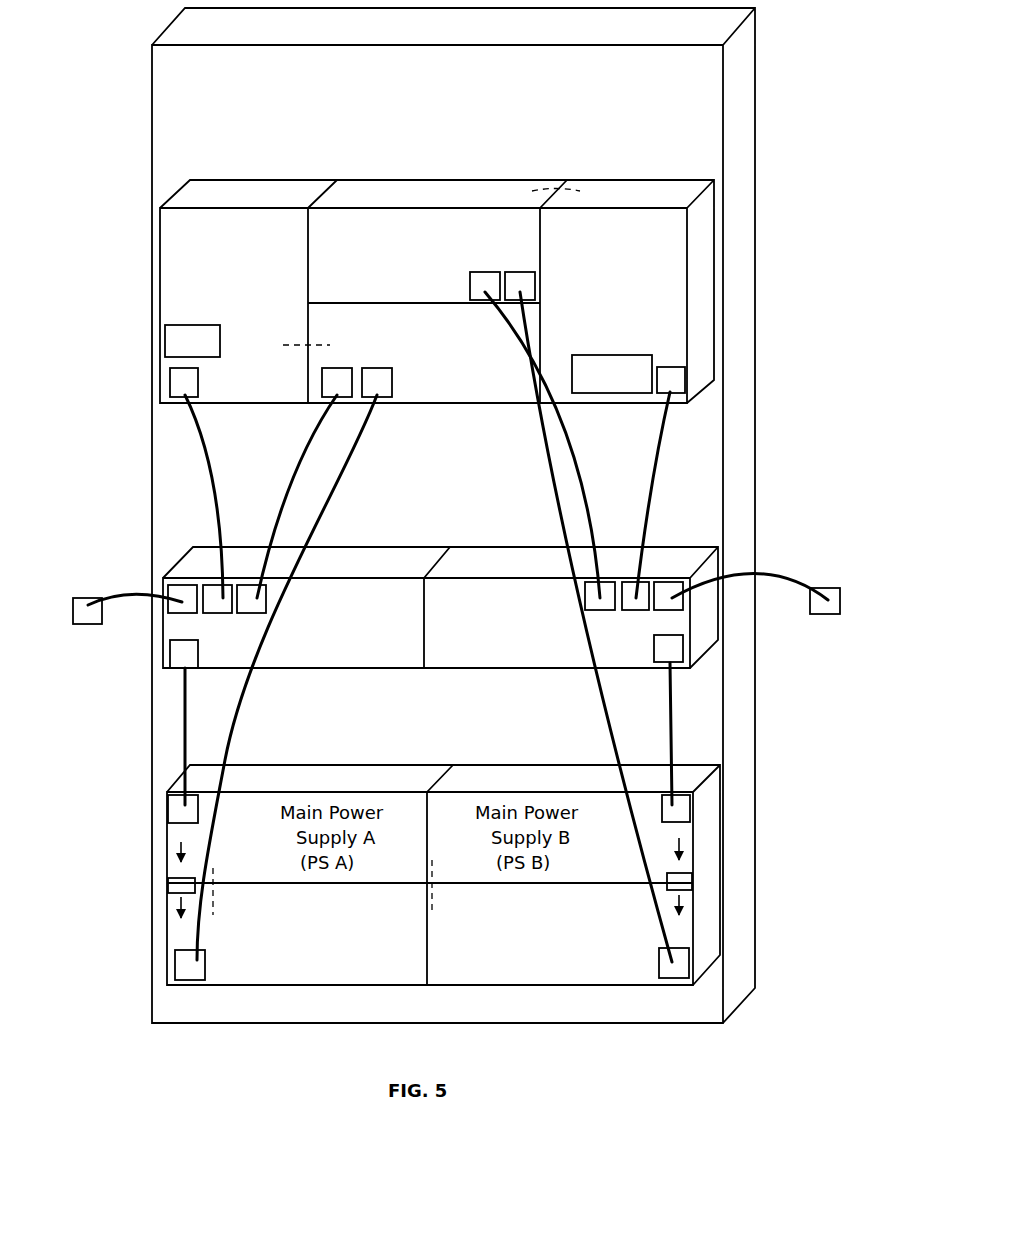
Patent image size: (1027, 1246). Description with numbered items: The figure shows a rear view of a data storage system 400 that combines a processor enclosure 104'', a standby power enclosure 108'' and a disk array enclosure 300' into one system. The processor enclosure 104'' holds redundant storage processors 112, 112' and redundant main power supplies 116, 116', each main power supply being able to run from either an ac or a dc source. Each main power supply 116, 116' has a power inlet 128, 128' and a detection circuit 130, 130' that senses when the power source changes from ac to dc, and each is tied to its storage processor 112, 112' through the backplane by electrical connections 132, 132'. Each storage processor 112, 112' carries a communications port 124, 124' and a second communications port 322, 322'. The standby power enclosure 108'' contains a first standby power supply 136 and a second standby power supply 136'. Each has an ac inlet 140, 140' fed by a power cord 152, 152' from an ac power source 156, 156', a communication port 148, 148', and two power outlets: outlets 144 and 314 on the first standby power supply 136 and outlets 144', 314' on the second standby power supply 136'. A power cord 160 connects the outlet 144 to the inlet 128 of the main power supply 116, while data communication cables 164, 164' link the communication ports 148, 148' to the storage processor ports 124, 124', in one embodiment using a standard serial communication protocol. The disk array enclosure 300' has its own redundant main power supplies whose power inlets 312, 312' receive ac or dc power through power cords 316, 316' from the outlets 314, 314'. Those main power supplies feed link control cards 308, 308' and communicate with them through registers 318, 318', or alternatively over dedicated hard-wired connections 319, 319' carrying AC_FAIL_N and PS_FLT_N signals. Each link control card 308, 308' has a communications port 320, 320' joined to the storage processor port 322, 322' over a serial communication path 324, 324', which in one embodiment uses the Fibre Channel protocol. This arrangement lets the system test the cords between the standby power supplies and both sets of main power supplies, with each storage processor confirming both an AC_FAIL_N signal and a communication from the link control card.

The data storage system 400 is at (152, 45).
The processor enclosure 104'' is at (437, 261).
The main power supply 116 is at (235, 272).
The main power supply 116' is at (611, 272).
The storage processor 112 is at (413, 340).
The storage processor 112' is at (384, 260).
The detection circuit 130 is at (148, 325).
The detection circuit 130' is at (698, 346).
The power inlet 128 is at (143, 370).
The power inlet 128' is at (738, 366).
The electrical connection 132 is at (280, 367).
The electrical connection 132' is at (556, 165).
The communications port 124 is at (378, 406).
The communications port 124' is at (495, 219).
The communications port 322 is at (419, 406).
The communications port 322' is at (449, 219).
The power cord 160 is at (195, 440).
The data communication cable 164 is at (286, 496).
The data communication cable 164' is at (562, 445).
The standby power enclosure 108'' is at (440, 580).
The first standby power supply 136 is at (350, 626).
The second standby power supply 136' is at (504, 626).
The ac inlet 140 is at (151, 574).
The ac inlet 140' is at (741, 532).
The outlet 144 is at (208, 561).
The outlet 144' is at (660, 561).
The communication port 148 is at (252, 554).
The communication port 148' is at (614, 547).
The first power cord 152 is at (119, 580).
The power cord 152' is at (753, 553).
The ac power source 156 is at (52, 624).
The ac power source 156' is at (849, 569).
The power outlet 314 is at (147, 657).
The power outlet 314' is at (736, 651).
The power cord 316 is at (141, 736).
The power cord 316' is at (744, 734).
The communication path 324 is at (287, 677).
The communication path 324' is at (592, 627).
The disk array enclosure 300' is at (443, 844).
The power inlet 312 is at (147, 802).
The power inlet 312' is at (740, 798).
The register 318 is at (140, 882).
The register 318' is at (743, 876).
The hard-wired connection 319 is at (261, 822).
The hard-wired connection 319' is at (392, 823).
The communications port 320 is at (145, 965).
The communications port 320' is at (739, 958).
The link control card 308 is at (309, 935).
The link control card 308' is at (537, 935).